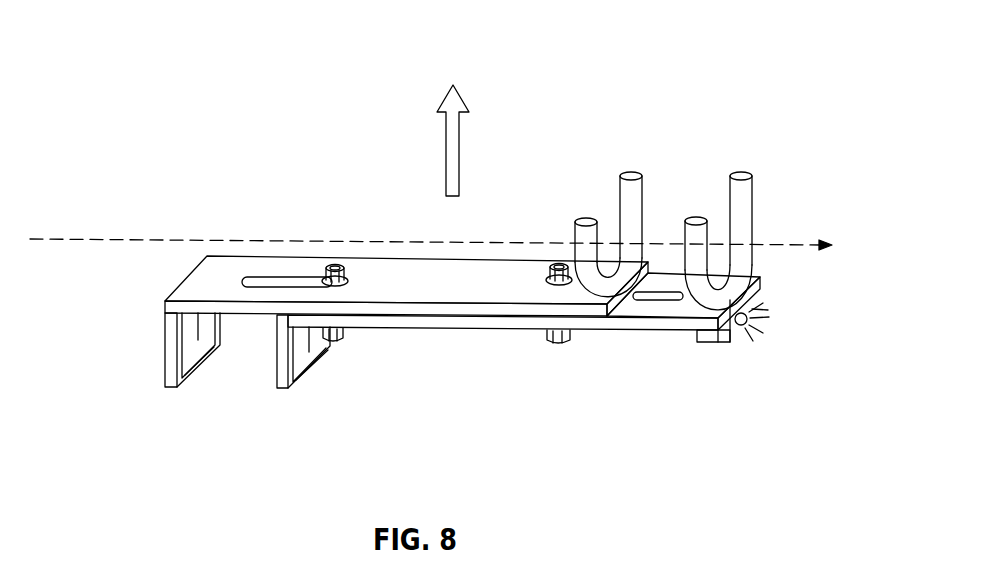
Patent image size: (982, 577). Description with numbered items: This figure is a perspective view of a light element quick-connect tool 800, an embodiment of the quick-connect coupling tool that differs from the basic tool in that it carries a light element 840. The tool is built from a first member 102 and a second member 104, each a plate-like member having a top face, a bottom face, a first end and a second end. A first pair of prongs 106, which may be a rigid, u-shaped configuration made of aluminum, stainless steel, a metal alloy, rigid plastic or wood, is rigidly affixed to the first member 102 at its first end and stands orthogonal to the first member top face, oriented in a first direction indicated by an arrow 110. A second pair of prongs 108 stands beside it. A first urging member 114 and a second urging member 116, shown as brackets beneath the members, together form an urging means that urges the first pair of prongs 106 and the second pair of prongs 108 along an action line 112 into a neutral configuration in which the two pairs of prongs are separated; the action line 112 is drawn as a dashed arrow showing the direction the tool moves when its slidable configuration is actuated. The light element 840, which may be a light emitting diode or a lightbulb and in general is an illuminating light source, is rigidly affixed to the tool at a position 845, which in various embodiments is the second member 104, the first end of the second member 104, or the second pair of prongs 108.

The light element quick-connect tool 800 is at (431, 216).
The first member 102 is at (420, 310).
The second member 104 is at (580, 320).
The first pair of prongs 106 is at (648, 177).
The second pair of prongs 108 is at (758, 177).
The arrow 110 is at (453, 142).
The action line 112 is at (92, 240).
The first urging member 114 is at (168, 350).
The second urging member 116 is at (282, 377).
The light element 840 is at (735, 335).
The position 845 is at (703, 327).